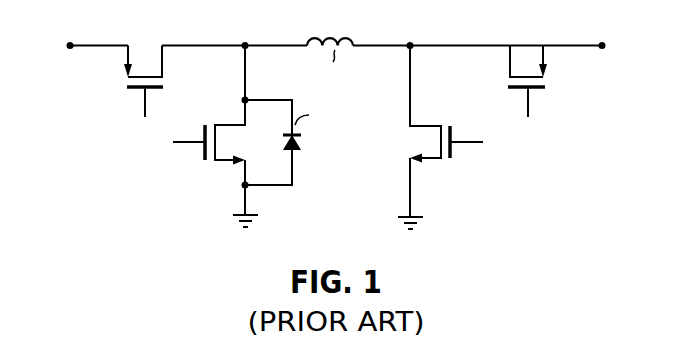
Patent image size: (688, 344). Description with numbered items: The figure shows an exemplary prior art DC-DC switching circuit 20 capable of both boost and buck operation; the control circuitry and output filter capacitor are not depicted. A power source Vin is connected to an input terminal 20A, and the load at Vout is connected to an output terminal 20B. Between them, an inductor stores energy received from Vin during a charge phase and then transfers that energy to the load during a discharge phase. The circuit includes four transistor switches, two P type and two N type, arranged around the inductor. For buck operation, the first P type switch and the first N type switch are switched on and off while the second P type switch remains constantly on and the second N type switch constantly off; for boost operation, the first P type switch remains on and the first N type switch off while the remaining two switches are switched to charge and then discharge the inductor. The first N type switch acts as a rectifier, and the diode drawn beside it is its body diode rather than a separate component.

The DC-DC switching circuit 20 is at (103, 158).
The input terminal 20A is at (69, 48).
The output terminal 20B is at (603, 48).